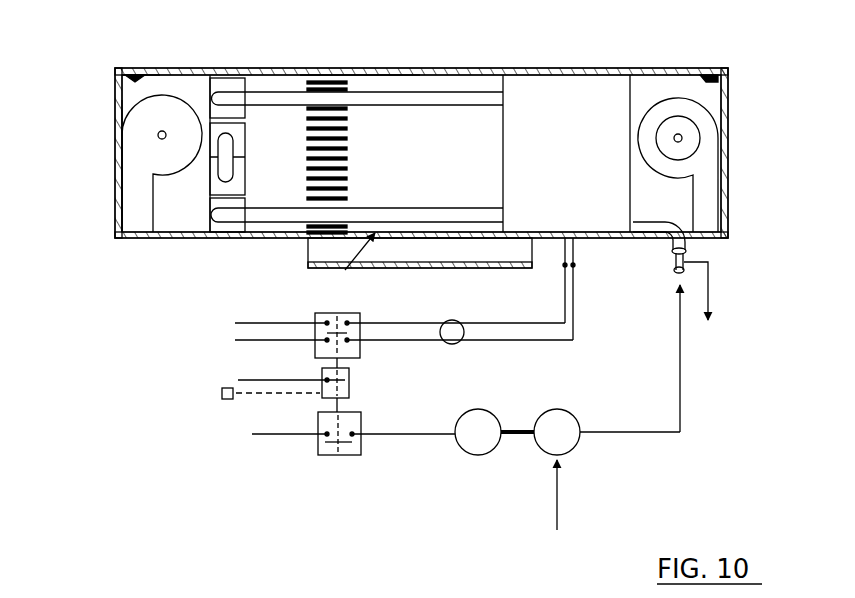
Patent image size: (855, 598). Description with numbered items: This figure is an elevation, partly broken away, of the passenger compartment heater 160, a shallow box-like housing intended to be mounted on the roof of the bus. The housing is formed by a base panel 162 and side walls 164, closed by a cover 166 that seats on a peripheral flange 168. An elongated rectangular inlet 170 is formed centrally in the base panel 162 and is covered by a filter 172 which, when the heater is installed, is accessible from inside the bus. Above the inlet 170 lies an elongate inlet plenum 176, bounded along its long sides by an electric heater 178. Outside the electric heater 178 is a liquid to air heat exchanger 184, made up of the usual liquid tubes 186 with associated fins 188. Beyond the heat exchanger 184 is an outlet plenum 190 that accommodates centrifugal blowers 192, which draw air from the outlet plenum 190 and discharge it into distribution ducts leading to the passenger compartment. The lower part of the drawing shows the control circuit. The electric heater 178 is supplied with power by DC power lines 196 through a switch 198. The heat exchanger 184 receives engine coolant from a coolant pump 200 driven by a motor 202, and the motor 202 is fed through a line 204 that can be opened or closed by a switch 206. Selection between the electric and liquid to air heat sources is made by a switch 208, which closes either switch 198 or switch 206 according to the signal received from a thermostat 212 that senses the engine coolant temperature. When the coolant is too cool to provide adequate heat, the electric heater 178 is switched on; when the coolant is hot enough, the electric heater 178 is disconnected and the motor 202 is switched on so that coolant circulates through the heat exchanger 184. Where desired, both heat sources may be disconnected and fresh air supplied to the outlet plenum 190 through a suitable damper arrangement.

The passenger compartment heater 160 is at (676, 42).
The base panel 162 is at (192, 232).
The side walls 164 is at (118, 185).
The cover 166 is at (350, 72).
The peripheral flange 168 is at (125, 80).
The inlet 170 is at (345, 270).
The filter 172 is at (390, 265).
The inlet plenum 176 is at (452, 130).
The electric heater 178 is at (330, 76).
The liquid to air heat exchanger 184 is at (225, 83).
The liquid tubes 186 is at (223, 173).
The fins 188 is at (235, 228).
The outlet plenum 190 is at (172, 87).
The centrifugal blower 192 is at (128, 141).
The DC power lines 196 is at (458, 343).
The switch 198 is at (356, 352).
The coolant pump 200 is at (578, 440).
The motor 202 is at (475, 455).
The line 204 is at (388, 436).
The switch 206 is at (335, 460).
The switch 208 is at (345, 386).
The thermostat 212 is at (226, 399).